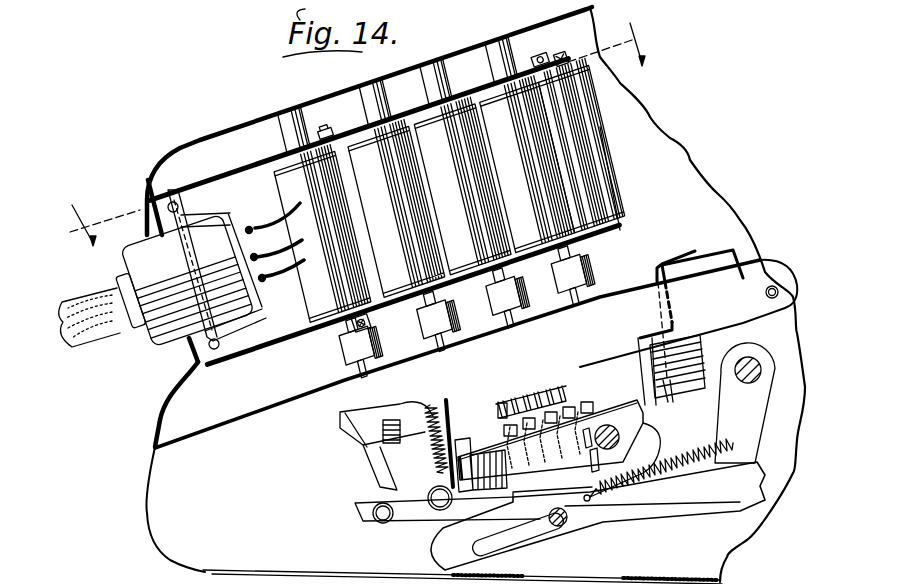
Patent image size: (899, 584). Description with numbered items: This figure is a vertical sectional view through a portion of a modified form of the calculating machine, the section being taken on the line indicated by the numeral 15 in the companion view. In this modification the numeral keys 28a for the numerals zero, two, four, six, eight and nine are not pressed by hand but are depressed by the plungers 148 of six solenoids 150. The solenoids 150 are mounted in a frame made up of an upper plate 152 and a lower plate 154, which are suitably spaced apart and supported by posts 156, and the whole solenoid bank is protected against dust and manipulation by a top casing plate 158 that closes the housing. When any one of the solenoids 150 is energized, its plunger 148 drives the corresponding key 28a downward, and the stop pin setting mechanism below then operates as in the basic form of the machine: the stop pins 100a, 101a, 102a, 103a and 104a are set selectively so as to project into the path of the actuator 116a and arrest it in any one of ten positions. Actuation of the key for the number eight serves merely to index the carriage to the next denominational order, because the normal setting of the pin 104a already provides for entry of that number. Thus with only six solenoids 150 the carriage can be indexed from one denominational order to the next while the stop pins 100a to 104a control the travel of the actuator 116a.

The section line 15- 15 is at (361, 134).
The numeral key 28a is at (345, 362).
The stop pin 100a is at (507, 428).
The stop pin 101a is at (503, 420).
The stop pin 102a is at (532, 415).
The stop pin 103a is at (551, 411).
The stop pin 104a is at (577, 408).
The actuator 116a is at (533, 545).
The plunger 148 is at (338, 335).
The solenoid 150 is at (540, 153).
The upper plate 152 is at (566, 60).
The lower plate 154 is at (620, 222).
The post 156 is at (328, 135).
The top casing plate 158 is at (357, 84).